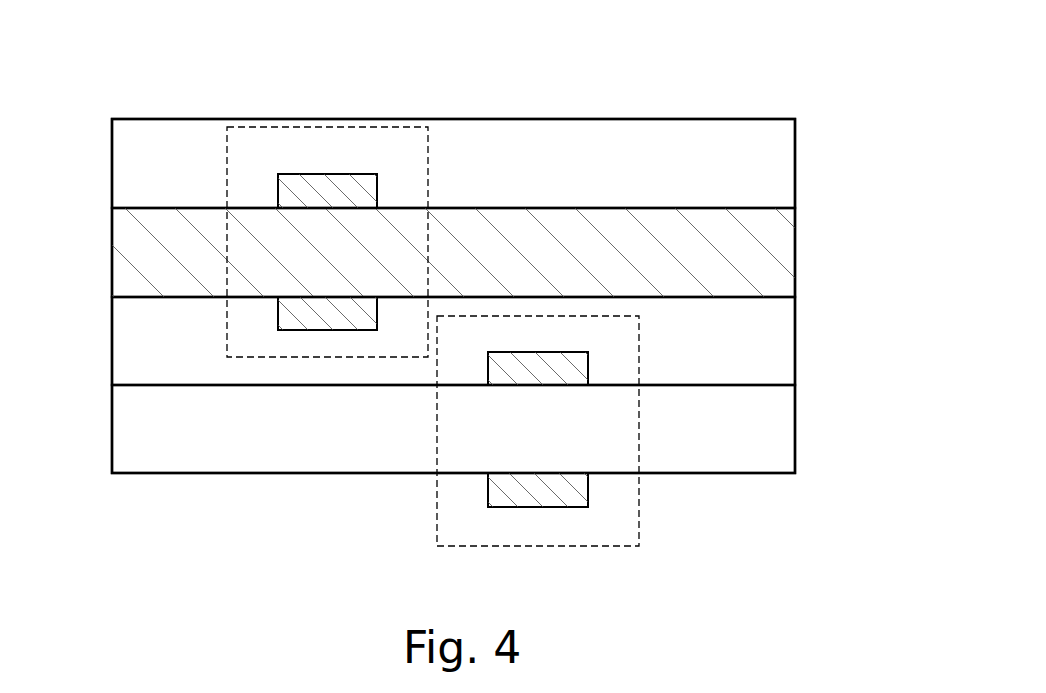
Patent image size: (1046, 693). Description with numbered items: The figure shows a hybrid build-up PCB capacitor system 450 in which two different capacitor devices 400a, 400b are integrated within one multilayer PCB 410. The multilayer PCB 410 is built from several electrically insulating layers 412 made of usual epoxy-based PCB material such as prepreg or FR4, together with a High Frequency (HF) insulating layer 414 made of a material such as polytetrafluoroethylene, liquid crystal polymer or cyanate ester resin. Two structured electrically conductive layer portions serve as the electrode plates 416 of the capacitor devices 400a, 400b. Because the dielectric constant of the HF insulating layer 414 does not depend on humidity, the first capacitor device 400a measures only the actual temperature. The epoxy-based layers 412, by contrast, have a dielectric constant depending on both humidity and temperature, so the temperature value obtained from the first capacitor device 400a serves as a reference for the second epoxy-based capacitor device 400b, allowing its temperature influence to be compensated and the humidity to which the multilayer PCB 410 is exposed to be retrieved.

The hybrid build-up PCB capacitor system 450 is at (777, 107).
The multilayer PCB 410 is at (103, 119).
The layers 412 is at (795, 165).
The HF insulating layer 414 is at (795, 253).
The electrode plates 416 is at (322, 174).
The first capacitor device 400a is at (270, 127).
The second epoxy-based capacitor device 400b is at (639, 492).